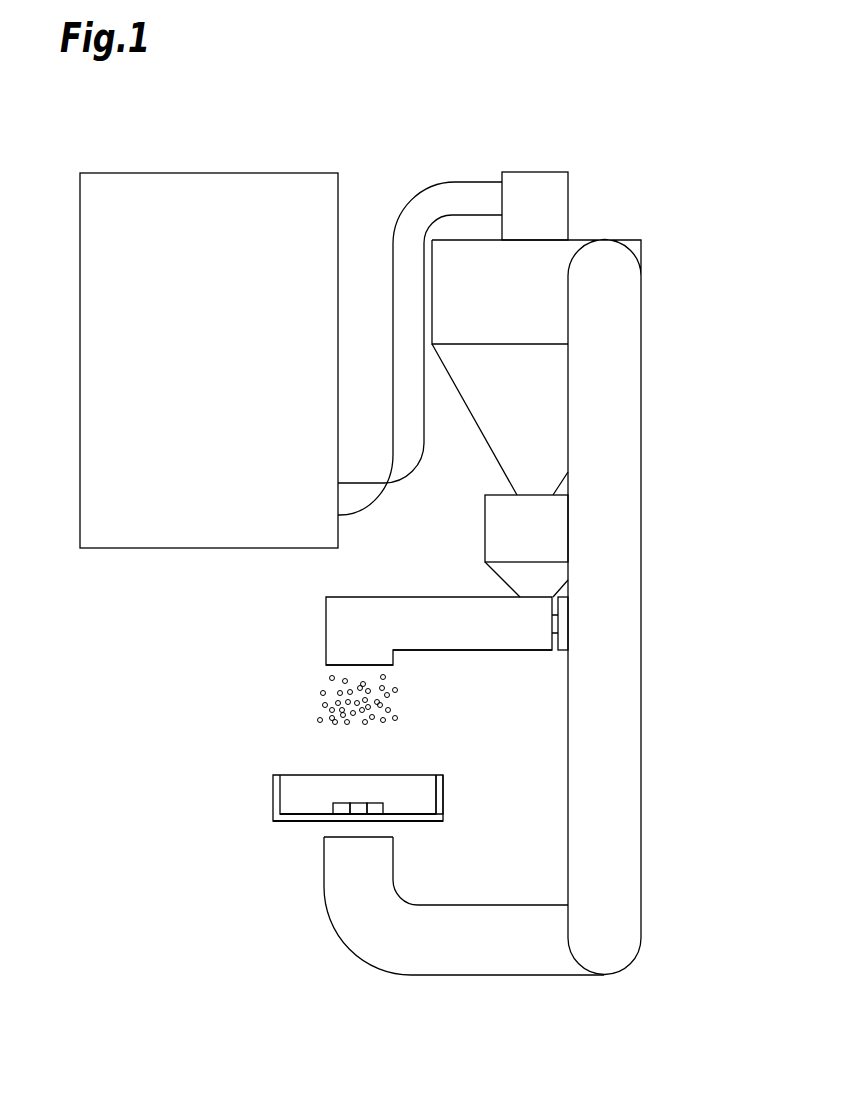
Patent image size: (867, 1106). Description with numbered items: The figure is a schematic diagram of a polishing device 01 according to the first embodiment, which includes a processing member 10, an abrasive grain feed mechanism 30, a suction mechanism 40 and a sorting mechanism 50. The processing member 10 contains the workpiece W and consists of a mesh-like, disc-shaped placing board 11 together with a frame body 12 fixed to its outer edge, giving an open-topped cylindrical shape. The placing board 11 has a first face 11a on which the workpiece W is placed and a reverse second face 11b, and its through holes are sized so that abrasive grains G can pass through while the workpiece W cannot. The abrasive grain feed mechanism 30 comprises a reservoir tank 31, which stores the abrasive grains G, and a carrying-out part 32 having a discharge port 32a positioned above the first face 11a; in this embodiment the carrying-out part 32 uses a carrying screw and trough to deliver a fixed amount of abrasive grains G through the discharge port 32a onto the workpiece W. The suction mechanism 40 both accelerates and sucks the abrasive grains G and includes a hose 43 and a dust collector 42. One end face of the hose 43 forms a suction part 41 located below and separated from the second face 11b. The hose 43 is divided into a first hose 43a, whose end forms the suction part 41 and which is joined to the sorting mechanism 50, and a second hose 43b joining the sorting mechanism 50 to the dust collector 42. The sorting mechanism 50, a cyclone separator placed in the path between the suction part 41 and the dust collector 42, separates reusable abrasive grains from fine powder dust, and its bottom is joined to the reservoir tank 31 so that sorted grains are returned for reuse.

The polishing device 01 is at (705, 89).
The processing member 10 is at (270, 784).
The placing board 11 is at (418, 820).
The first face 11a is at (406, 812).
The second face 11b is at (398, 823).
The frame body 12 is at (444, 795).
The workpiece W is at (378, 802).
The abrasive grains G is at (318, 720).
The abrasive grain feed mechanism 30 is at (336, 620).
The reservoir tank 31 is at (490, 538).
The carrying-out part 32 is at (418, 640).
The discharge port 32a is at (347, 667).
The suction mechanism 40 is at (642, 668).
The suction part 41 is at (338, 830).
The dust collector 42 is at (291, 184).
The hose 43 is at (464, 558).
The first hose 43a is at (505, 920).
The second hose 43b is at (453, 196).
The sorting mechanism 50 is at (552, 182).